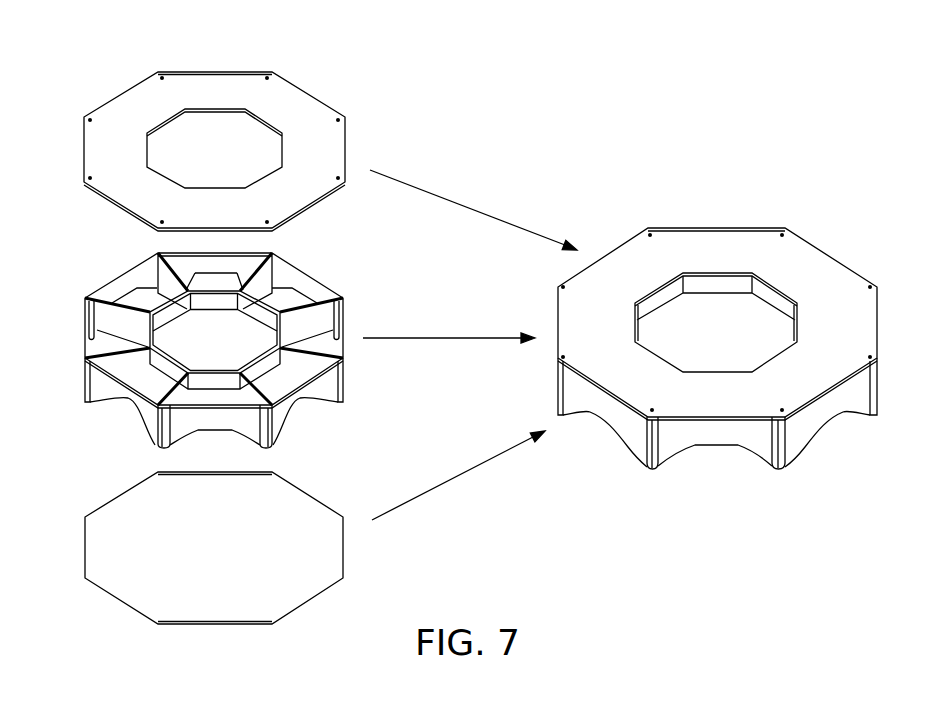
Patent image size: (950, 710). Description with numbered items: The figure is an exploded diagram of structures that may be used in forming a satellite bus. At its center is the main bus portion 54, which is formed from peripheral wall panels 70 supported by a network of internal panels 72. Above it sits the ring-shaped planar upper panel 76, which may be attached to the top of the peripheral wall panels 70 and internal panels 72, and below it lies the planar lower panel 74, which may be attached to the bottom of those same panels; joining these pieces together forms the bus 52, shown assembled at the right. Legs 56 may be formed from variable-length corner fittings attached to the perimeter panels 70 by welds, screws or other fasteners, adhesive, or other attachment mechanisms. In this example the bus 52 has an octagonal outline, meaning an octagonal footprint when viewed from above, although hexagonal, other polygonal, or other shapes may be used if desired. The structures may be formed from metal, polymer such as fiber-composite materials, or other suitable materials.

The bus 52 is at (768, 198).
The main bus portion 54 is at (233, 367).
The legs 56 is at (345, 322).
The peripheral wall panels 70 is at (128, 398).
The internal panels 72 is at (303, 342).
The planar lower panel 74 is at (215, 627).
The ring-shaped planar upper panel 76 is at (325, 72).